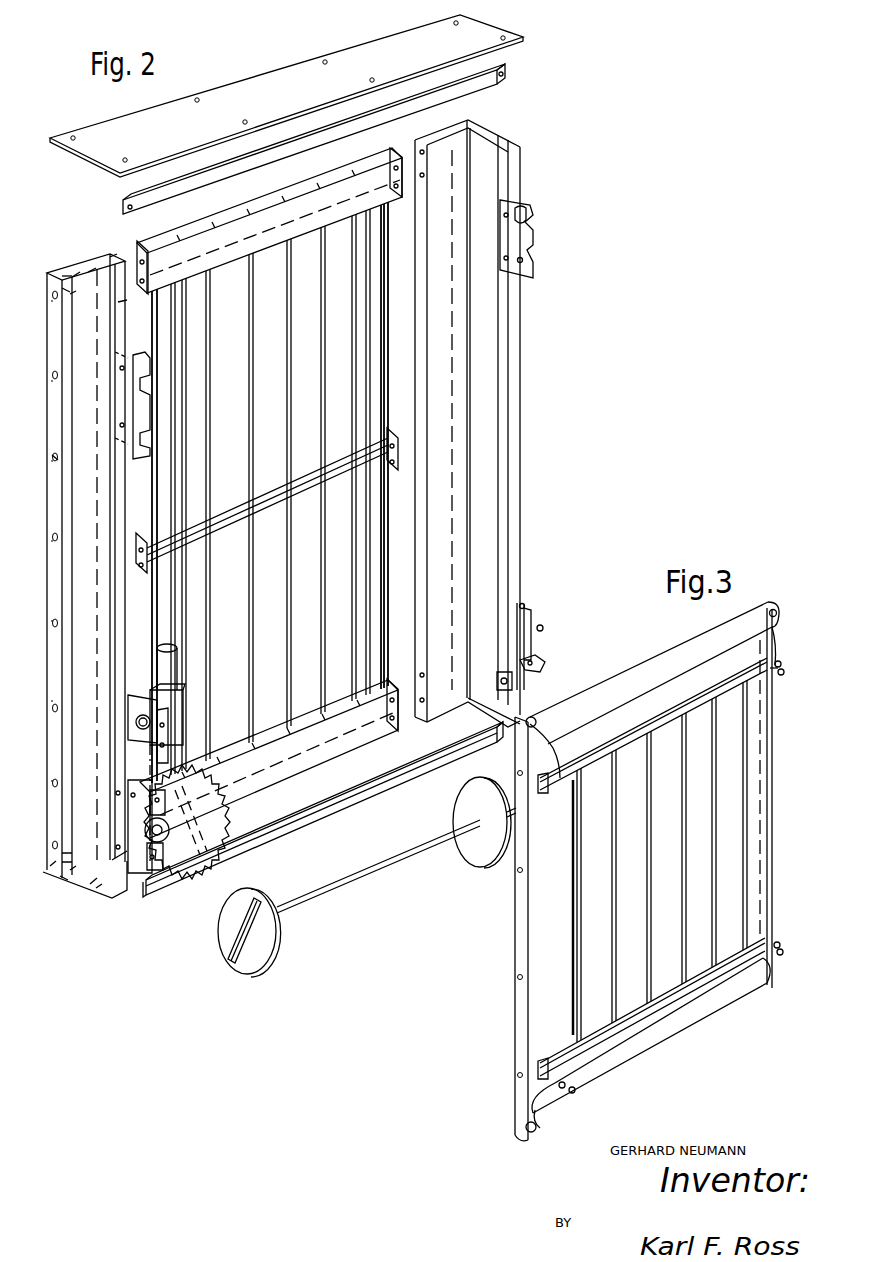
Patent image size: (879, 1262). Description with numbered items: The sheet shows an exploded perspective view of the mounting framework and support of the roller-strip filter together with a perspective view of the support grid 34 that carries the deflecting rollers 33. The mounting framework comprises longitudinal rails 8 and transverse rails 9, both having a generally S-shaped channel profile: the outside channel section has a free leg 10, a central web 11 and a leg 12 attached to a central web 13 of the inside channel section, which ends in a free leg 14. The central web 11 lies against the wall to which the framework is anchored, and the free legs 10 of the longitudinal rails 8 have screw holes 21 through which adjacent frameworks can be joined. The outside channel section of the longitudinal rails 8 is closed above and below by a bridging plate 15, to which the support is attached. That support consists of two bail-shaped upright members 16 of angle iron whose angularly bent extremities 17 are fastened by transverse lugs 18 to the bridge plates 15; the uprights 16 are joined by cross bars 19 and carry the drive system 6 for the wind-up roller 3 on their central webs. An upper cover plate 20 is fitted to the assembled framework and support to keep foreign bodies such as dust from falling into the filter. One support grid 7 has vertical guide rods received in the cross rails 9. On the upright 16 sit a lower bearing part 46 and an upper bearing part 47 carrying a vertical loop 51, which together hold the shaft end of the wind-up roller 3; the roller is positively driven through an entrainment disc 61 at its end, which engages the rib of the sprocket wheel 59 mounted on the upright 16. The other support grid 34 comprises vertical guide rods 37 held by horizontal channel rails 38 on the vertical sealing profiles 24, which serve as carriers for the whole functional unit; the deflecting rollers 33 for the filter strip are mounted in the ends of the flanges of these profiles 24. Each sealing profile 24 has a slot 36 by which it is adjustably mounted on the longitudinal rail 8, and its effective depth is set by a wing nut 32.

In FIG. 2, the wind-up roller 3 is at (383, 877).
In FIG. 2, the drive system 6 is at (177, 708).
In FIG. 2, the support grid 7 is at (258, 406).
In FIG. 2, the longitudinal rails 8 is at (56, 560).
In FIG. 2, the transverse rails 9 is at (310, 213).
In FIG. 2, the free leg 10 is at (53, 267).
In FIG. 2, the central web 11 is at (62, 267).
In FIG. 2, the leg 12 is at (76, 256).
In FIG. 2, the central web 13 is at (92, 267).
In FIG. 2, the free leg 14 is at (118, 253).
In FIG. 2, the bridging plate 15 is at (72, 293).
In FIG. 2, the upright member 16 is at (120, 652).
In FIG. 2, the angularly bent extremities 17 is at (122, 300).
In FIG. 2, the transverse lugs 18 is at (68, 292).
In FIG. 2, the cross bars 19 is at (515, 82).
In FIG. 2, the upper cover plate 20 is at (230, 95).
In FIG. 2, the screw holes 21 is at (58, 460).
In FIG. 3, the sealing profile 24 is at (518, 953).
In FIG. 3, the wing nut 32 is at (777, 670).
In FIG. 3, the deflecting rollers 33 is at (630, 675).
In FIG. 3, the support grid 34 is at (572, 978).
In FIG. 2, the slot 36 is at (518, 872).
In FIG. 3, the vertical guide rods 37 is at (650, 872).
In FIG. 3, the horizontal channel rails 38 is at (623, 740).
In FIG. 2, the lower bearing part 46 is at (512, 681).
In FIG. 2, the upper bearing part 47 is at (533, 660).
In FIG. 2, the vertical loop 51 is at (535, 623).
In FIG. 2, the sprocket wheel 59 is at (190, 880).
In FIG. 2, the entrainment disc 61 is at (262, 972).